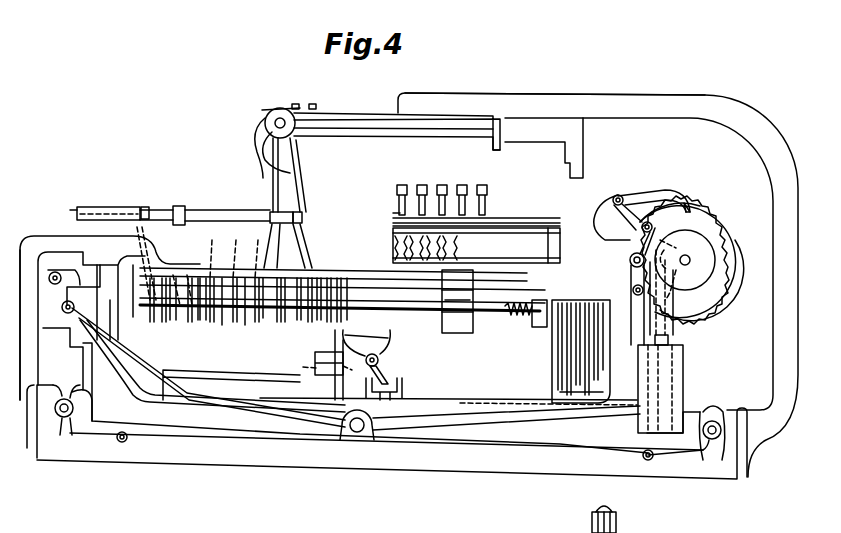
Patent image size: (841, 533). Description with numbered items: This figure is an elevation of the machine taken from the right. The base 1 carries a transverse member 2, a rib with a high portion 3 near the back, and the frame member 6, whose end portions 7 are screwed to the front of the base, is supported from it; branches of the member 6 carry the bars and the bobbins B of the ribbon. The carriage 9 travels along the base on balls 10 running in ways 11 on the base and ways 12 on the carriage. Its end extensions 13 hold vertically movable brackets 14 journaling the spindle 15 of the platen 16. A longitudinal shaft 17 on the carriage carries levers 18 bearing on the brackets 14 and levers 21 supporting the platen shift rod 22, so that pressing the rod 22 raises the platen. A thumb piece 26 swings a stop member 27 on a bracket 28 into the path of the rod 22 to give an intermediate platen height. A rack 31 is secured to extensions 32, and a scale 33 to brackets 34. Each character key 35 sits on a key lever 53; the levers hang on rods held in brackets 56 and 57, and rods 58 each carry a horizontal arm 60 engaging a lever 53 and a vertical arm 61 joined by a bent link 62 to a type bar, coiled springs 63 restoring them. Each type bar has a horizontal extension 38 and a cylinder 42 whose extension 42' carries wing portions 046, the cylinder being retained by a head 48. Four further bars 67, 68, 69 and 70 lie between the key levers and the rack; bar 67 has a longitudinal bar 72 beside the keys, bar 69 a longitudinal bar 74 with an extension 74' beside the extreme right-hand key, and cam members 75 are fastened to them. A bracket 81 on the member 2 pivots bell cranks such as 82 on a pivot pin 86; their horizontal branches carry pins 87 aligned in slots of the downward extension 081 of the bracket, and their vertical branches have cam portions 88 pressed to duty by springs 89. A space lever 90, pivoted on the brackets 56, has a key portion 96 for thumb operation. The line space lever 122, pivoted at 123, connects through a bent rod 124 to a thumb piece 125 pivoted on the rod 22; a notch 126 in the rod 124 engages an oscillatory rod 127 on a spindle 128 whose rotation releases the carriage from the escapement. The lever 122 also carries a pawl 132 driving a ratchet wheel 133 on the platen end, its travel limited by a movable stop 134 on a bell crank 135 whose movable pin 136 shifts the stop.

The base 1 is at (728, 483).
The transverse member 2 is at (735, 125).
The high portion 3 is at (515, 96).
The frame member 6 is at (430, 300).
The end portions 7 is at (362, 276).
The carriage 9 is at (692, 410).
The anti-friction balls 10 is at (643, 457).
The ways 11 is at (650, 460).
The ways 12 is at (645, 452).
The end extensions 13 is at (684, 368).
The vertically movable brackets 14 is at (675, 332).
The spindle 15 is at (692, 261).
The platen 16 is at (738, 242).
The longitudinal shaft 17 is at (360, 433).
The levers 18 is at (510, 415).
The levers 21 is at (230, 410).
The platen shift rod 22 is at (45, 270).
The thumb piece 26 is at (55, 345).
The stop member 27 is at (62, 308).
The bracket 28 is at (82, 382).
The rack 31 is at (338, 400).
The extensions 32 is at (322, 375).
The scale 33 is at (360, 318).
The brackets 34 is at (403, 386).
The character key 35 is at (230, 210).
The horizontal extension 38 is at (485, 338).
The cylinder 42 is at (476, 245).
The extension 42' is at (457, 200).
The wing portions 046 is at (396, 215).
The head 48 is at (616, 518).
The character key levers 53 is at (250, 325).
The brackets 56 is at (130, 262).
The brackets 57 is at (543, 302).
The rods 58 is at (278, 322).
The horizontal arm 60 is at (203, 322).
The vertical arm 61 is at (598, 302).
The link 62 is at (580, 395).
The coiled springs 63 is at (518, 318).
The bar 67 is at (298, 322).
The bar 68 is at (309, 322).
The bar 69 is at (318, 322).
The bar 70 is at (329, 322).
The longitudinal bar 72 is at (180, 206).
The longitudinal bar 74 is at (299, 180).
The extension 74' is at (255, 175).
The cam members 75 is at (305, 226).
The bracket 81 is at (396, 121).
The bell crank 82 is at (388, 138).
The downward extension 081 is at (493, 142).
The pivot pin 86 is at (272, 112).
The downwardly extending pin 87 is at (584, 176).
The cam portions 88 is at (288, 248).
The springs 89 is at (258, 136).
The space lever 90 is at (150, 362).
The key portions 96 is at (109, 302).
The line space lever 122 is at (625, 210).
The pivot 123 is at (630, 260).
The bent rod 124 is at (478, 404).
The thumb piece 125 is at (80, 272).
The notch 126 is at (398, 385).
The oscillatory rod 127 is at (384, 378).
The spindle 128 is at (378, 356).
The pawl 132 is at (658, 193).
The ratchet wheel 133 is at (718, 222).
The movable stop 134 is at (692, 210).
The bell crank 135 is at (679, 265).
The movable pin 136 is at (738, 288).
The bobbins B is at (548, 224).